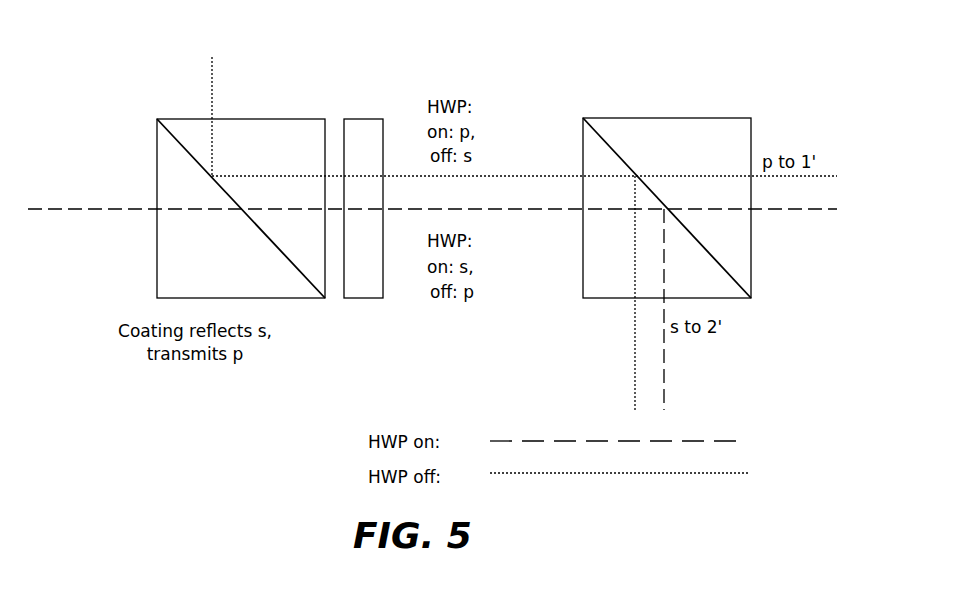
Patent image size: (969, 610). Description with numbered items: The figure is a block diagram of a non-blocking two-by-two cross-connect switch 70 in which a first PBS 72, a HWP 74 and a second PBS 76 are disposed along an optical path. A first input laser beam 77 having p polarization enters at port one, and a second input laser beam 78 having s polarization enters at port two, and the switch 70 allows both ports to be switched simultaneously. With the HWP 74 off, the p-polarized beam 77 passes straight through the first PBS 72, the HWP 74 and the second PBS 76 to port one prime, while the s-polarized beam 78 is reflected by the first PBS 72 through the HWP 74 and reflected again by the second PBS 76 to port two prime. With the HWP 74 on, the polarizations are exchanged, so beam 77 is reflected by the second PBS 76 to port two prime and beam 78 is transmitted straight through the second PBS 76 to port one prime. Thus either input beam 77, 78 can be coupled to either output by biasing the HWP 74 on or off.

The switch 70 is at (707, 58).
The first PBS 72 is at (309, 118).
The HWP 74 is at (367, 118).
The second PBS 76 is at (697, 118).
The first input laser beam 77 is at (47, 213).
The second input laser beam 78 is at (213, 68).